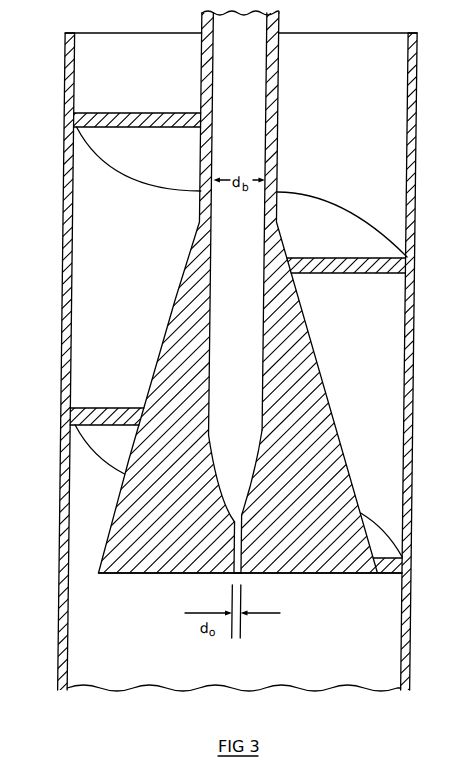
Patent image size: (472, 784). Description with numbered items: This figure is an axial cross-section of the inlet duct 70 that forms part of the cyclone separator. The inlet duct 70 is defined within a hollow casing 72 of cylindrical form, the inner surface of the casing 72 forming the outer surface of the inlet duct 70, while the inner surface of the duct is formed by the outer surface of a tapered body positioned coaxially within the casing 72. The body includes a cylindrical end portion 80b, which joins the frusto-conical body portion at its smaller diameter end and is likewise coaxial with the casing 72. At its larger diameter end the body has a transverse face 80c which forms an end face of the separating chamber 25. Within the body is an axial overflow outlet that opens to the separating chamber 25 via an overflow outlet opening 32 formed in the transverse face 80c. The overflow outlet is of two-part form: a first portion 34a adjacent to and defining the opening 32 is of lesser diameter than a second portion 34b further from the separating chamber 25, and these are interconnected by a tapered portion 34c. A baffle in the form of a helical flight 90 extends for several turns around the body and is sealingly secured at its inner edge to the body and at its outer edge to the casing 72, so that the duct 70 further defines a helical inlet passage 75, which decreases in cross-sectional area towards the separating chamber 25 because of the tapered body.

The inlet duct 70 is at (325, 45).
The hollow casing 72 is at (66, 64).
The helical inlet passage 75 is at (240, 342).
The cylindrical end portion 80b is at (281, 118).
The transverse face 80c is at (325, 574).
The helical flight 90 is at (375, 270).
The second portion of the overflow outlet 34b is at (238, 285).
The tapered portion 34c is at (258, 483).
The first portion of the overflow outlet 34a is at (249, 540).
The overflow outlet opening 32 is at (240, 575).
The separating chamber 25 is at (121, 658).